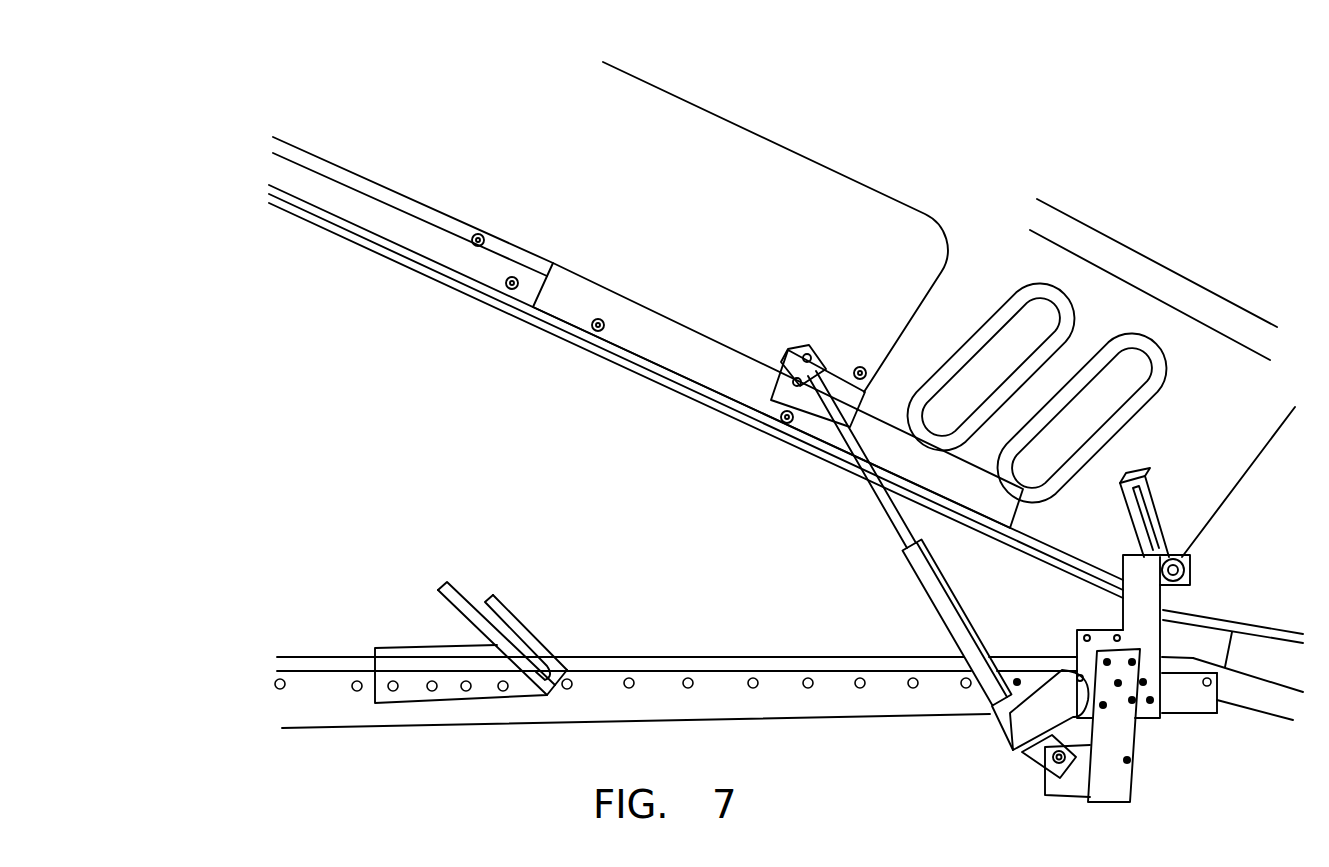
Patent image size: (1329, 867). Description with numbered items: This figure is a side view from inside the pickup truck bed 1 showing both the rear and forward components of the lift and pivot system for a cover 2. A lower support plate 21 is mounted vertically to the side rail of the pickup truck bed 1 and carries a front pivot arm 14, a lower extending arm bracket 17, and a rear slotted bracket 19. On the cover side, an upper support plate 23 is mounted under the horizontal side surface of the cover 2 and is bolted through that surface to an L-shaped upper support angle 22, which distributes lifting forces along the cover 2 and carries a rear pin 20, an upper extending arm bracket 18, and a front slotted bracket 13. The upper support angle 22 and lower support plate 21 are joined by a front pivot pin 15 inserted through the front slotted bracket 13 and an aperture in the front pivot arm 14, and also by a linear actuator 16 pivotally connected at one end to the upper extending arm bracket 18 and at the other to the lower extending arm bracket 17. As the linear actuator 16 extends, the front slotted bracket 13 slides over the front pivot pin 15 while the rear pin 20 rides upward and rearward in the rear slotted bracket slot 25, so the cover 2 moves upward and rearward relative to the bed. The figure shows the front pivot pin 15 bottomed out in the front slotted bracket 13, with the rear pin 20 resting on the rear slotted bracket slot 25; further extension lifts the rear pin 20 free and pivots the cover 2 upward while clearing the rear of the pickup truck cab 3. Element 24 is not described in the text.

The pickup truck bed 1 is at (789, 649).
The cover 2 is at (392, 228).
The pickup truck cab 3 is at (1224, 645).
The front slotted bracket 13 is at (1173, 499).
The front pivot arm 14 is at (1116, 611).
The front pivot pin 15 is at (1206, 572).
The linear actuator 16 is at (913, 560).
The lower extending arm bracket 17 is at (1106, 774).
The upper extending arm bracket 18 is at (802, 416).
The rear slotted bracket 19 is at (417, 643).
The rear pin 20 is at (520, 299).
The lower support plate 21 is at (599, 667).
The upper support angle 22 is at (333, 210).
The upper support plate 23 is at (625, 372).
The slot 24 is at (1176, 535).
The rear slotted bracket slot 25 is at (467, 593).